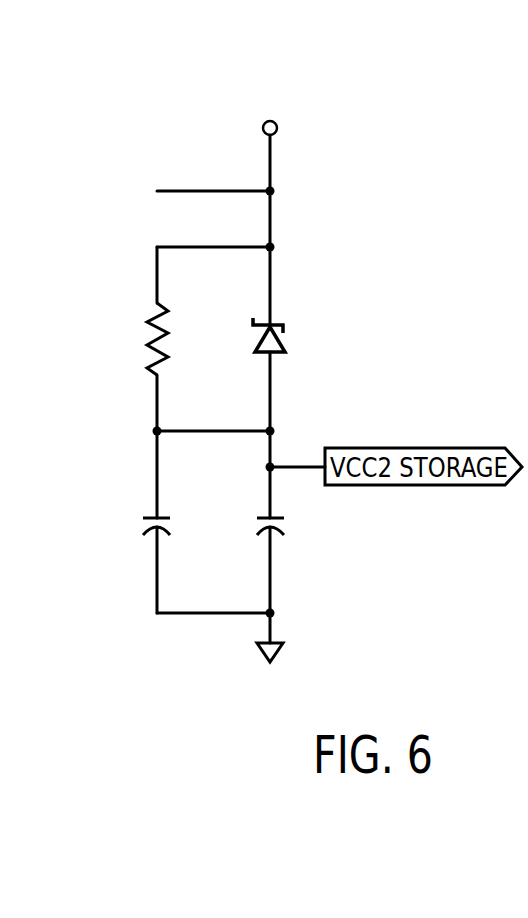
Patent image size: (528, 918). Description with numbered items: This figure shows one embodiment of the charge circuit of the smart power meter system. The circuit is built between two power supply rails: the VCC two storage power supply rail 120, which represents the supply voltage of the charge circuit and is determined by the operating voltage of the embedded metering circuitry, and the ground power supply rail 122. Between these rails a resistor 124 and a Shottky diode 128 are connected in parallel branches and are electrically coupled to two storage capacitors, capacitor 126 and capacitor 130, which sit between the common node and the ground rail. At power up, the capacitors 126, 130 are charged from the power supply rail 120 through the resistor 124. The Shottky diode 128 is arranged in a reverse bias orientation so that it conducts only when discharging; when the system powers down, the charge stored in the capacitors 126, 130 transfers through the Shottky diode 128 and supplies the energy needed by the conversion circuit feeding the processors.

The power supply rail 120 is at (276, 133).
The power supply rail 122 is at (278, 652).
The resistor 124 is at (163, 325).
The capacitor 126 is at (155, 516).
The Shottky diode 128 is at (283, 346).
The capacitor 130 is at (280, 530).